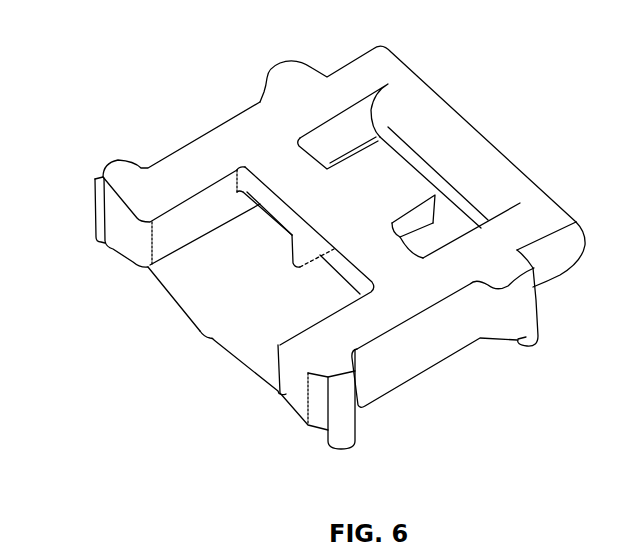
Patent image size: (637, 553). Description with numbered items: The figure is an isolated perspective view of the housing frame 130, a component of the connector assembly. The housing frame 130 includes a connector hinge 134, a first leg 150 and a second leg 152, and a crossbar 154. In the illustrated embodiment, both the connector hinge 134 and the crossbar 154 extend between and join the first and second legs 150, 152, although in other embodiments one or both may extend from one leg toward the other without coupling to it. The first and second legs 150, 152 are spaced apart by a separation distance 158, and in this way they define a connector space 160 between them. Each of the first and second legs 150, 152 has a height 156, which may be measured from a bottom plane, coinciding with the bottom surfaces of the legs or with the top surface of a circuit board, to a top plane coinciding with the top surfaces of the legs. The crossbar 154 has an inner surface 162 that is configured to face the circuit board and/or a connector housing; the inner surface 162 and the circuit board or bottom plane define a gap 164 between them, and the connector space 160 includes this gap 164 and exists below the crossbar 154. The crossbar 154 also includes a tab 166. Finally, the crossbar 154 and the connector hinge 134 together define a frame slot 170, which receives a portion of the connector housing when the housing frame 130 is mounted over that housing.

The housing frame 130 is at (184, 82).
The connector hinge 134 is at (462, 148).
The first leg 150 is at (246, 125).
The second leg 152 is at (370, 320).
The crossbar 154 is at (297, 180).
The height 156 is at (96, 208).
The separation distance 158 is at (201, 334).
The connector space 160 is at (176, 283).
The inner surface 162 is at (274, 217).
The gap 164 is at (291, 238).
The tab 166 is at (400, 182).
The frame slot 170 is at (453, 215).